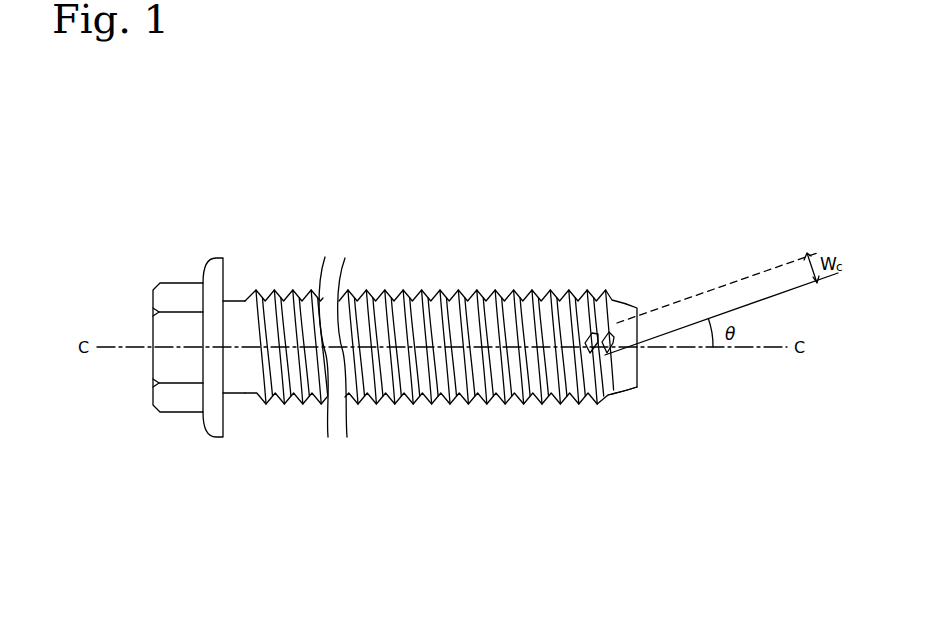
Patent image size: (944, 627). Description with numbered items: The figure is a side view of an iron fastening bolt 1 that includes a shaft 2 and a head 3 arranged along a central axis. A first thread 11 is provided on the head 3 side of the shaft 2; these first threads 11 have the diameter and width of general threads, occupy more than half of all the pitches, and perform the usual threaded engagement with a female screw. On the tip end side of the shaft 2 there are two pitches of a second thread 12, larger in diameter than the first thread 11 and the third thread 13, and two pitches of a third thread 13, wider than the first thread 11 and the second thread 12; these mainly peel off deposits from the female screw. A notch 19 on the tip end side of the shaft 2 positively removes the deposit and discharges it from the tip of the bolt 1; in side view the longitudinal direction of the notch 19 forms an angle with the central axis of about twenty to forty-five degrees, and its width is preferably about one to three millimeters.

The bolt 1 is at (414, 199).
The shaft 2 is at (275, 405).
The head 3 is at (177, 283).
The first thread 11 is at (515, 290).
The second thread 12 is at (550, 290).
The third thread 13 is at (586, 290).
The notch 19 is at (598, 404).